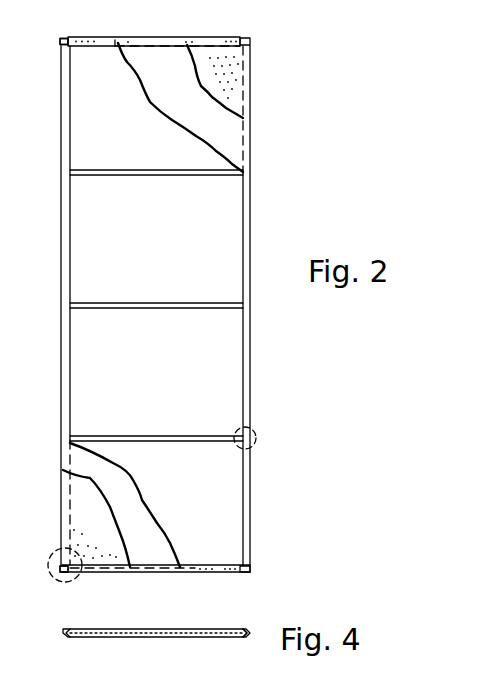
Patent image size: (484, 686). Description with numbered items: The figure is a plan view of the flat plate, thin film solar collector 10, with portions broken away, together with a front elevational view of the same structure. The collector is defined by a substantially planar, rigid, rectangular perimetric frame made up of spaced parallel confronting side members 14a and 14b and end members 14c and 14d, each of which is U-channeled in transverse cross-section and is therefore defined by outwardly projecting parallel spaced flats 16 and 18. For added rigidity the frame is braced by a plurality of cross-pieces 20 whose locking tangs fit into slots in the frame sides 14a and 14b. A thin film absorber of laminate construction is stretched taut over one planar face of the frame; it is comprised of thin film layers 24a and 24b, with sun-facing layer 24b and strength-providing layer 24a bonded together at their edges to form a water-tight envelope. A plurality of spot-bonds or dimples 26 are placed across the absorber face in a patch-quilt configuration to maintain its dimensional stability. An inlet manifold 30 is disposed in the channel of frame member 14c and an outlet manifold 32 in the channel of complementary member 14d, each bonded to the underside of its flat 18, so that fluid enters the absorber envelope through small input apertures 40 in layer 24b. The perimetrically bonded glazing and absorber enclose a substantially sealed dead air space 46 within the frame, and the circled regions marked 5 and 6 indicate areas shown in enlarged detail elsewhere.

In FIG. 2, the detail area of FIG. 5 is at (53, 556).
In FIG. 2, the detail area of FIG. 6 is at (256, 432).
In FIG. 2, the solar collector 10 is at (266, 204).
In FIG. 2, the frame side member 14a is at (250, 358).
In FIG. 2, the frame side member 14b is at (62, 266).
In FIG. 2, the frame member 14c is at (98, 40).
In FIG. 2, the frame member 14d is at (200, 568).
In FIG. 4, the flat 16 is at (132, 638).
In FIG. 2, the flat 18 is at (0, 238).
In FIG. 4, the flat 18 is at (108, 628).
In FIG. 2, the cross-piece 20 is at (120, 170).
In FIG. 2, the thin film layer 24a is at (238, 82).
In FIG. 2, the thin film layer 24b is at (158, 62).
In FIG. 2, the spot-bond 26 is at (234, 98).
In FIG. 2, the inlet manifold 30 is at (60, 40).
In FIG. 2, the outlet manifold 32 is at (63, 574).
In FIG. 4, the outlet manifold 32 is at (180, 638).
In FIG. 2, the input aperture 40 is at (108, 40).
In FIG. 2, the dead air space 46 is at (122, 116).